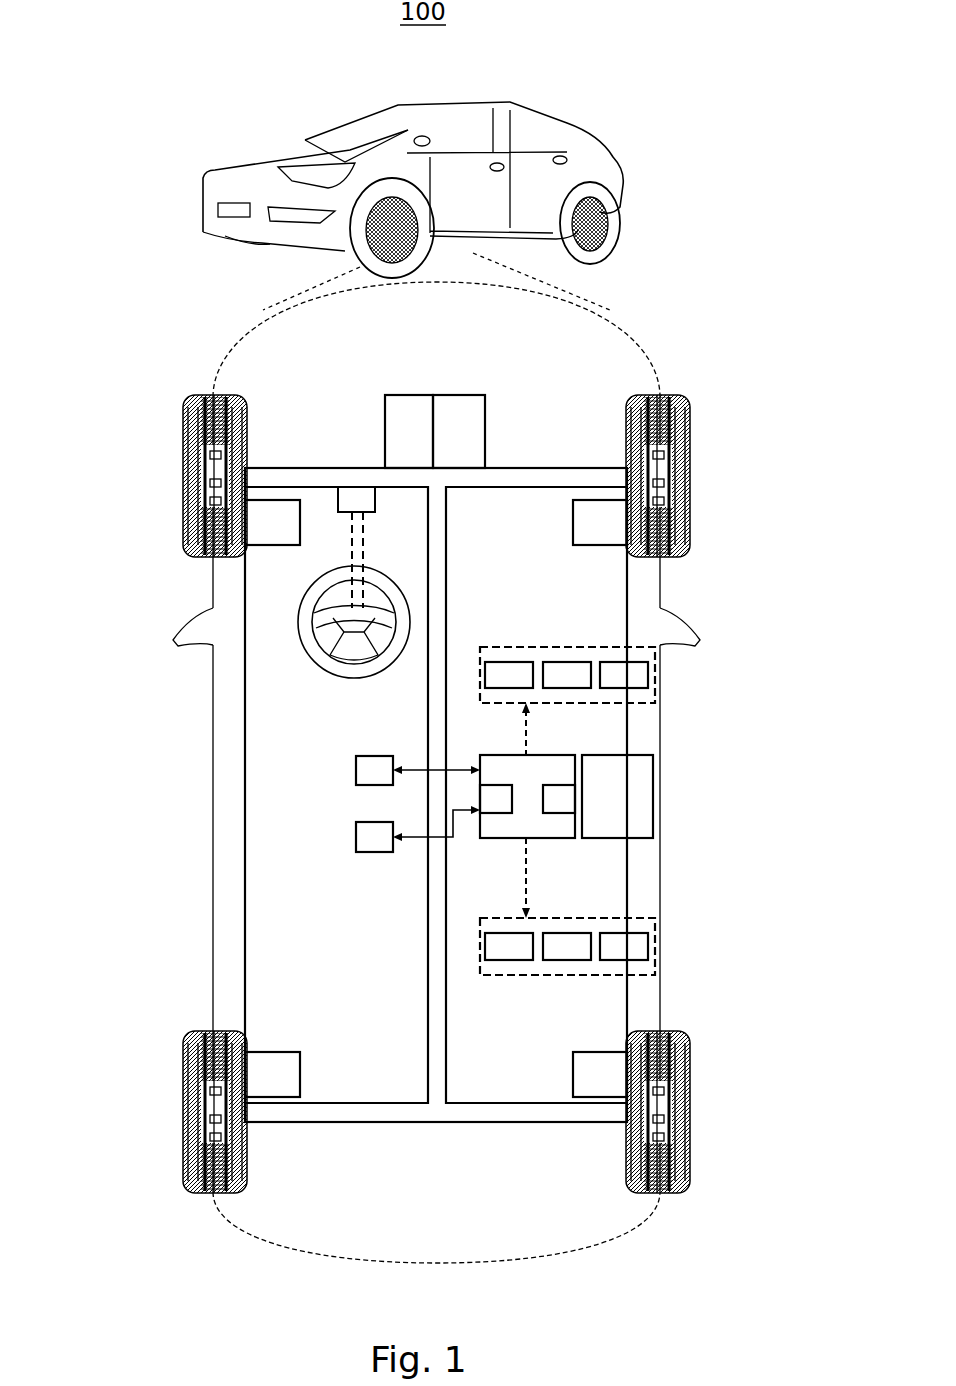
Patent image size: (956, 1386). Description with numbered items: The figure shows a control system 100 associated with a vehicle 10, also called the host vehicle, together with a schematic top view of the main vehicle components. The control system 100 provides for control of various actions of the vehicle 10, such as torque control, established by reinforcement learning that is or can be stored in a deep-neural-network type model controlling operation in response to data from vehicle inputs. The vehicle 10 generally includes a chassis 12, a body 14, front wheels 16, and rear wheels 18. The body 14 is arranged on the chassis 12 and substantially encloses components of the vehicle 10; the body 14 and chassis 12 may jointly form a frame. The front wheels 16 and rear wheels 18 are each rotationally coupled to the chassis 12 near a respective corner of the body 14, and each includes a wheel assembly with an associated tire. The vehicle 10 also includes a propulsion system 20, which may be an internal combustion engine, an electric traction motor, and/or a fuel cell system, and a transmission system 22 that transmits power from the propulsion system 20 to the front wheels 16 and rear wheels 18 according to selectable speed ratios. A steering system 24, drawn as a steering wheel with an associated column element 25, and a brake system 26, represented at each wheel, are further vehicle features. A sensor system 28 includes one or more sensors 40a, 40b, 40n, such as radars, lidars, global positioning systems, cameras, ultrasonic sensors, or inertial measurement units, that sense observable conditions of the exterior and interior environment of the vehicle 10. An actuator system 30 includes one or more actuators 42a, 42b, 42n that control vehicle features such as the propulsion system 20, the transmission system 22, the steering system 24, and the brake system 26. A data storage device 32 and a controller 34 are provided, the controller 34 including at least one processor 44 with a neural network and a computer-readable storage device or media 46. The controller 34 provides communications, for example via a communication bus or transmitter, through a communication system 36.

The vehicle 10 is at (203, 207).
The chassis 12 is at (437, 1122).
The body 14 is at (215, 697).
The front wheels 16 is at (183, 462).
The rear wheels 18 is at (183, 1100).
The propulsion system 20 is at (388, 432).
The transmission system 22 is at (470, 432).
The steering system 24 is at (312, 676).
The steering column 25 is at (360, 672).
The brake system 26 is at (283, 527).
The sensor system 28 is at (520, 647).
The actuator system 30 is at (605, 918).
The data storage device 32 is at (365, 770).
The controller 34 is at (492, 768).
The communication system 36 is at (610, 768).
The sensor 40a is at (497, 665).
The sensor 40b is at (560, 675).
The sensor 40n is at (648, 677).
The actuator 42a is at (500, 940).
The actuator 42b is at (578, 940).
The actuator 42n is at (650, 947).
The processor 44 is at (500, 815).
The computer-readable storage device or media 46 is at (552, 797).
The control system 100 is at (365, 835).